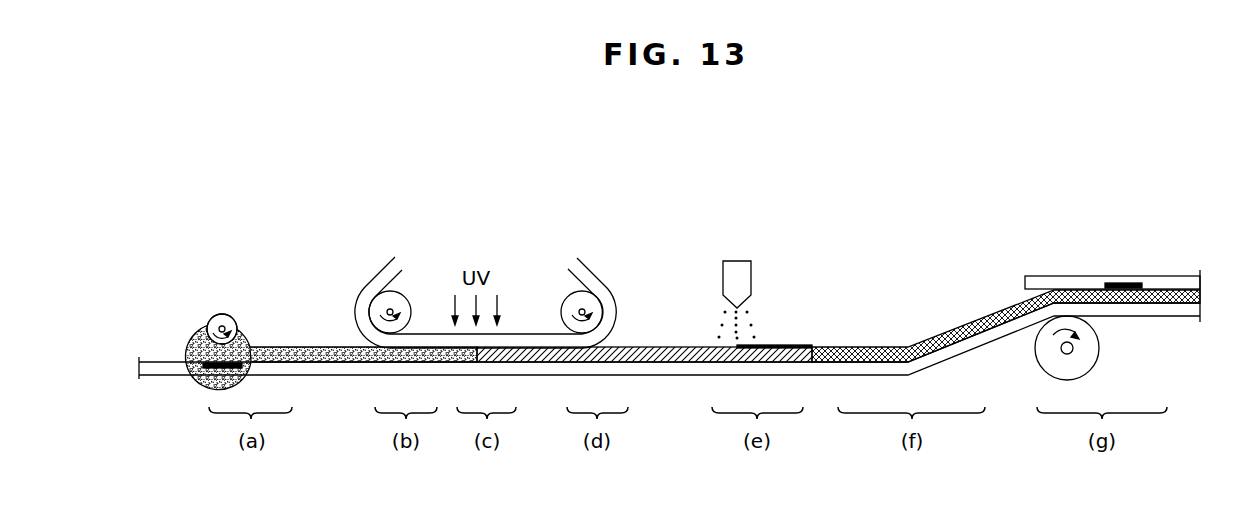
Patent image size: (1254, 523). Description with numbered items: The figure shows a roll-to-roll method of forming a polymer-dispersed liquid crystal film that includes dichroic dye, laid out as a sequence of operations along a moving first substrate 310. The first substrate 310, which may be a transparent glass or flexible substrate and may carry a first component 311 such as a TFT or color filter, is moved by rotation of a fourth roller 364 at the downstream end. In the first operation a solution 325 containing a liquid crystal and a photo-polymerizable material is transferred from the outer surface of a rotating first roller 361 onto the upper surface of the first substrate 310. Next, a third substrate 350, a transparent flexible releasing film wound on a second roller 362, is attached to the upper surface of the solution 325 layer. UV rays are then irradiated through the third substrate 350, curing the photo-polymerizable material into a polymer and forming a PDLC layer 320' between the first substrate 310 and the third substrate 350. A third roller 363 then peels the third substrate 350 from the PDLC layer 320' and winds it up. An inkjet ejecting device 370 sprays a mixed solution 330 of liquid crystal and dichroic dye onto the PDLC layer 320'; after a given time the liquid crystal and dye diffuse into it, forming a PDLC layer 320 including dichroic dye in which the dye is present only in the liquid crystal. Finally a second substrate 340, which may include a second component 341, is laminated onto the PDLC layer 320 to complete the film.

The first substrate 310 is at (163, 368).
The first component 311 is at (205, 371).
The solution 325 is at (200, 304).
The first roller 361 is at (228, 317).
The second roller 362 is at (390, 297).
The third substrate 350 is at (525, 340).
The third roller 363 is at (590, 297).
The PDLC layer 320' is at (644, 323).
The inkjet ejecting device 370 is at (737, 265).
The mixed solution 330 is at (788, 345).
The PDLC layer including dichroic dye 320 is at (1006, 320).
The second substrate 340 is at (1042, 279).
The second component 341 is at (1127, 283).
The fourth roller 364 is at (1095, 352).